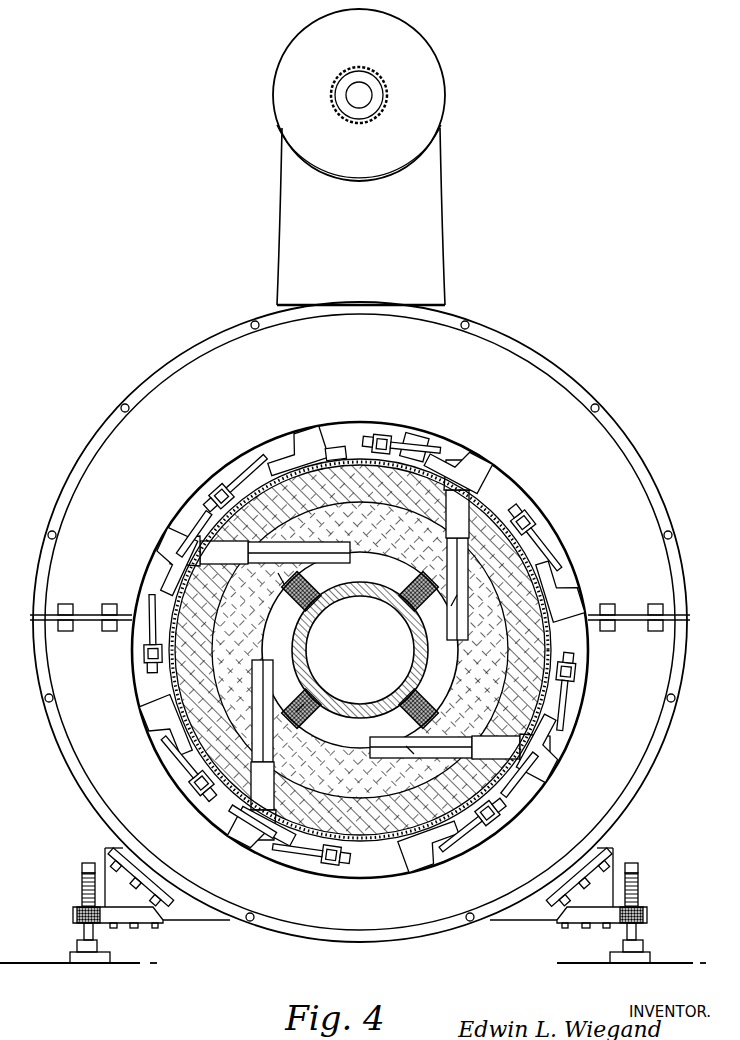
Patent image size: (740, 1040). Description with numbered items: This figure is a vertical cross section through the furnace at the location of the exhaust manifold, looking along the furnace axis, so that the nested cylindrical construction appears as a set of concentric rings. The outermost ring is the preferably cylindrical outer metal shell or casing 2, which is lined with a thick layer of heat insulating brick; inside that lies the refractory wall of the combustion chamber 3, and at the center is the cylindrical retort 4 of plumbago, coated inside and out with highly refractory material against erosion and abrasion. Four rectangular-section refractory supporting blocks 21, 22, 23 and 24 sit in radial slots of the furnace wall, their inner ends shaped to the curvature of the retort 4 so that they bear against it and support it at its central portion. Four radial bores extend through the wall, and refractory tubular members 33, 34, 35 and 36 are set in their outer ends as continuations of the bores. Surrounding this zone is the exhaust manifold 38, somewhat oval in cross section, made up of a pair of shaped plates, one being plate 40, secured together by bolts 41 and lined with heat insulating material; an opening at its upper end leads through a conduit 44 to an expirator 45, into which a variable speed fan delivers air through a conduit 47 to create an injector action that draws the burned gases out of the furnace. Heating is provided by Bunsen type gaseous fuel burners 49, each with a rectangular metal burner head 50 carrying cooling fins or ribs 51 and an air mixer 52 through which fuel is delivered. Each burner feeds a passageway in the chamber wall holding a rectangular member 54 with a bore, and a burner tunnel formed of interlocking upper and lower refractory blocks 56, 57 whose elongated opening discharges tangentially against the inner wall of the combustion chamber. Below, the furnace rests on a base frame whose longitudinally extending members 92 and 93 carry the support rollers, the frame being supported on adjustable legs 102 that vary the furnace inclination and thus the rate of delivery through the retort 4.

The outer metal shell or casing 2 is at (160, 665).
The wall of the combustion chamber 3 is at (246, 598).
The cylindrical retort 4 is at (411, 663).
The supporting block of refractory material 21 is at (293, 699).
The supporting block of refractory material 22 is at (319, 589).
The supporting block of refractory material 23 is at (418, 601).
The supporting block of refractory material 24 is at (421, 713).
The tubular member 33 is at (134, 640).
The tubular member 34 is at (406, 432).
The tubular member 35 is at (582, 689).
The tubular member 36 is at (319, 870).
The exhaust manifold 38 is at (566, 372).
The plate 40 is at (195, 368).
The bolts 41 is at (120, 403).
The conduit 44 is at (420, 222).
The expirator 45 is at (428, 86).
The conduit 47 is at (332, 97).
The gaseous fuel burner 49 is at (293, 440).
The burner head 50 is at (336, 458).
The cooling fins or ribs 51 is at (190, 533).
The air mixer 52 is at (250, 470).
The rectangular member 54 is at (206, 520).
The upper block of burner tunnel 56 is at (351, 553).
The lower block of burner tunnel 57 is at (281, 578).
The longitudinally extending frame member 92 is at (152, 870).
The longitudinally extending frame member 93 is at (566, 882).
The adjustable leg 102 is at (80, 885).